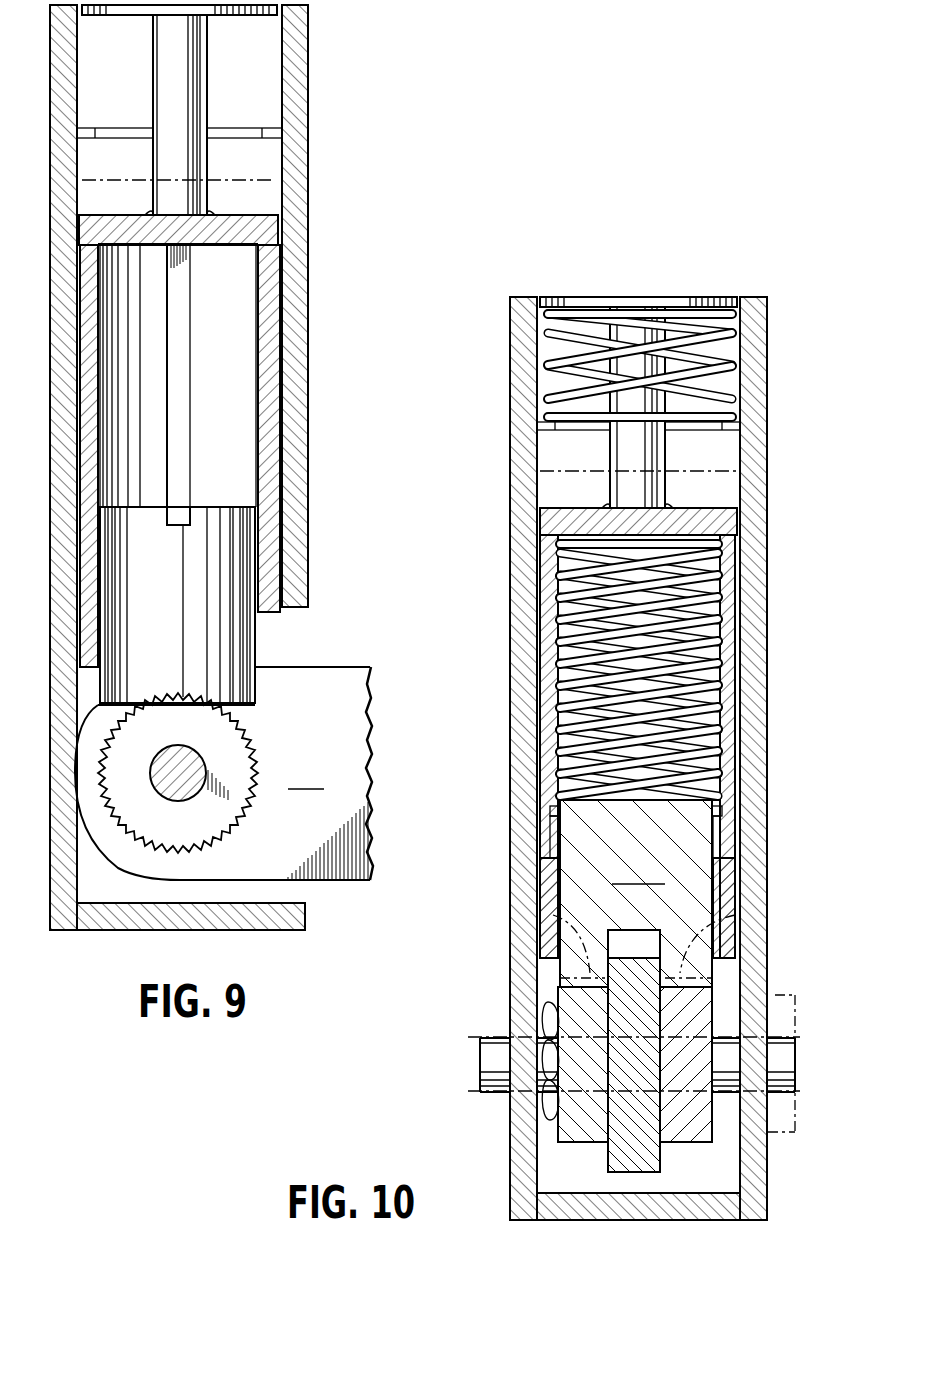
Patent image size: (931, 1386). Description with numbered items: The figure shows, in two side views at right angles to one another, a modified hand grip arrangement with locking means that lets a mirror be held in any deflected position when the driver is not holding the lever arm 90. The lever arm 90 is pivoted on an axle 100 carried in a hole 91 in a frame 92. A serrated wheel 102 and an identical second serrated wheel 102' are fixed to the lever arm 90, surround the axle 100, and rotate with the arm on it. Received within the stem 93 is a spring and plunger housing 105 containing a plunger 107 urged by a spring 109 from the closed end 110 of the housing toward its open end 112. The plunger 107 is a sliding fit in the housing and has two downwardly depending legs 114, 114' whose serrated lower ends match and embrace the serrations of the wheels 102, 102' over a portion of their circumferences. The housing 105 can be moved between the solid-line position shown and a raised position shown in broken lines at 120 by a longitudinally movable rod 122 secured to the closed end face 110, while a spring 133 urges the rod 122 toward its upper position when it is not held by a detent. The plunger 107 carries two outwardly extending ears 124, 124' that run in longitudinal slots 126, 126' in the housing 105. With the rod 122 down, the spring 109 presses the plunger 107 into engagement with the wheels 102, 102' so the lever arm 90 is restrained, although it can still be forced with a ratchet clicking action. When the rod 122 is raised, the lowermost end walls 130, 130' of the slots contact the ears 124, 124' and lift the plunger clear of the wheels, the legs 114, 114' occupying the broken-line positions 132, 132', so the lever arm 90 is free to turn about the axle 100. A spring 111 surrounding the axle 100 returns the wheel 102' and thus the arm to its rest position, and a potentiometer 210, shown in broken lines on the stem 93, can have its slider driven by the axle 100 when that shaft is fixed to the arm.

In FIG. 9, the lever arm 90 is at (224, 773).
In FIG. 10, the lever arm 90 is at (637, 1143).
In FIG. 10, the hole 91 is at (505, 1110).
In FIG. 10, the frame 92 is at (515, 1017).
In FIG. 9, the stem 93 is at (298, 502).
In FIG. 10, the stem 93 is at (518, 555).
In FIG. 9, the axle 100 is at (170, 778).
In FIG. 10, the axle 100 is at (483, 1055).
In FIG. 9, the serrated wheel 102 is at (270, 773).
In FIG. 10, the serrated wheel 102 is at (705, 1126).
In FIG. 10, the second serrated wheel 102' is at (608, 1128).
In FIG. 9, the spring and plunger housing 105 is at (293, 370).
In FIG. 10, the spring and plunger housing 105 is at (545, 655).
In FIG. 9, the plunger 107 is at (192, 582).
In FIG. 10, the plunger 107 is at (636, 893).
In FIG. 10, the spring 109 is at (690, 595).
In FIG. 9, the closed end 110 is at (253, 228).
In FIG. 10, the closed end 110 is at (567, 520).
In FIG. 10, the spring 111 is at (547, 1130).
In FIG. 10, the open end 112 is at (540, 940).
In FIG. 9, the leg 114 is at (307, 639).
In FIG. 10, the leg 114 is at (768, 911).
In FIG. 10, the leg 114' is at (557, 988).
In FIG. 9, the raised position 120 is at (247, 180).
In FIG. 10, the raised position 120 is at (577, 470).
In FIG. 9, the rod 122 is at (200, 40).
In FIG. 10, the rod 122 is at (630, 335).
In FIG. 9, the ear 124 is at (208, 471).
In FIG. 10, the ear 124 is at (785, 789).
In FIG. 10, the ear 124' is at (487, 788).
In FIG. 9, the longitudinal slot 126 is at (248, 375).
In FIG. 10, the longitudinal slot 126 is at (704, 689).
In FIG. 10, the longitudinal slot 126' is at (485, 691).
In FIG. 10, the lowermost end wall 130 is at (781, 853).
In FIG. 10, the lowermost end wall 130' is at (485, 851).
In FIG. 10, the raised leg position 132 is at (768, 933).
In FIG. 10, the raised leg position 132' is at (511, 938).
In FIG. 10, the spring 133 is at (707, 366).
In FIG. 10, the potentiometer 210 is at (818, 1008).